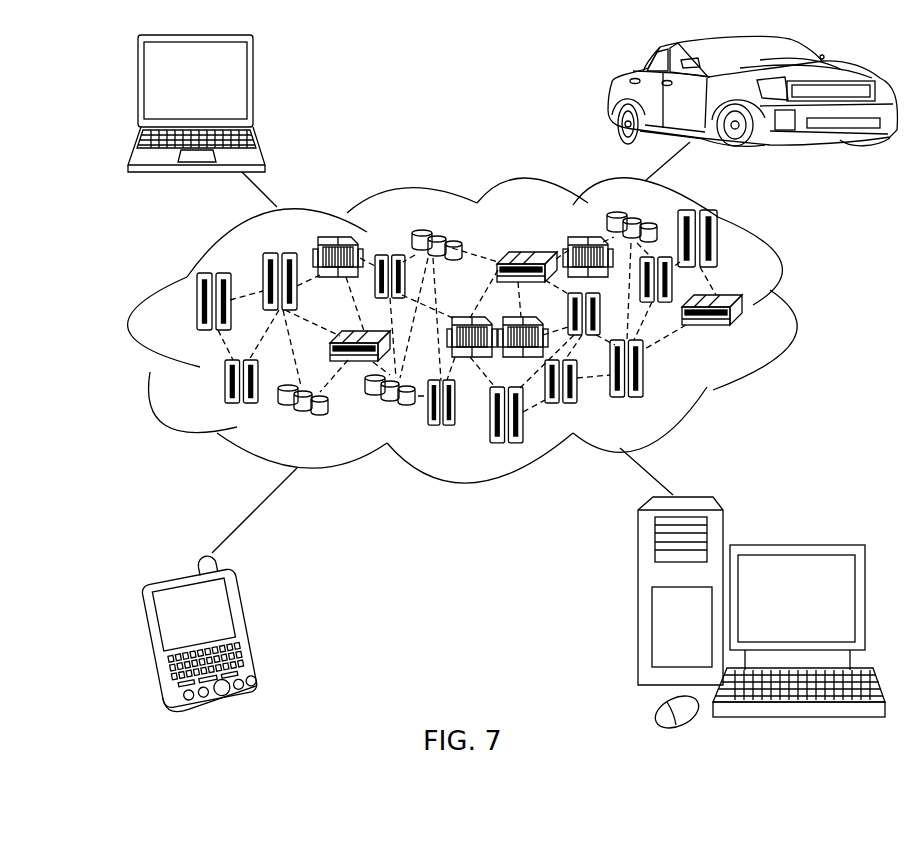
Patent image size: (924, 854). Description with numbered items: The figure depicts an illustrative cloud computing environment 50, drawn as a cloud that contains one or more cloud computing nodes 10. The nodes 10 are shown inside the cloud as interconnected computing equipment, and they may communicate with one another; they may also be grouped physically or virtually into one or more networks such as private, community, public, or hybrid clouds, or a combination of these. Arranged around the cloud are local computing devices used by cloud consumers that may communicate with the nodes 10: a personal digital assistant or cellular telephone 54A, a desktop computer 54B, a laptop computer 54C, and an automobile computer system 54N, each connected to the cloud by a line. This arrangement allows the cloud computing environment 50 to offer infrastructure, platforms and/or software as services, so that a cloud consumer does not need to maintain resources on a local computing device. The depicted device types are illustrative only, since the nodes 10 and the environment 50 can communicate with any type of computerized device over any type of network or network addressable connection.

The cloud computing node 10 is at (746, 333).
The cloud computing environment 50 is at (795, 305).
The personal digital assistant or cellular telephone 54A is at (250, 627).
The desktop computer 54B is at (793, 545).
The laptop computer 54C is at (253, 85).
The automobile computer system 54N is at (612, 97).